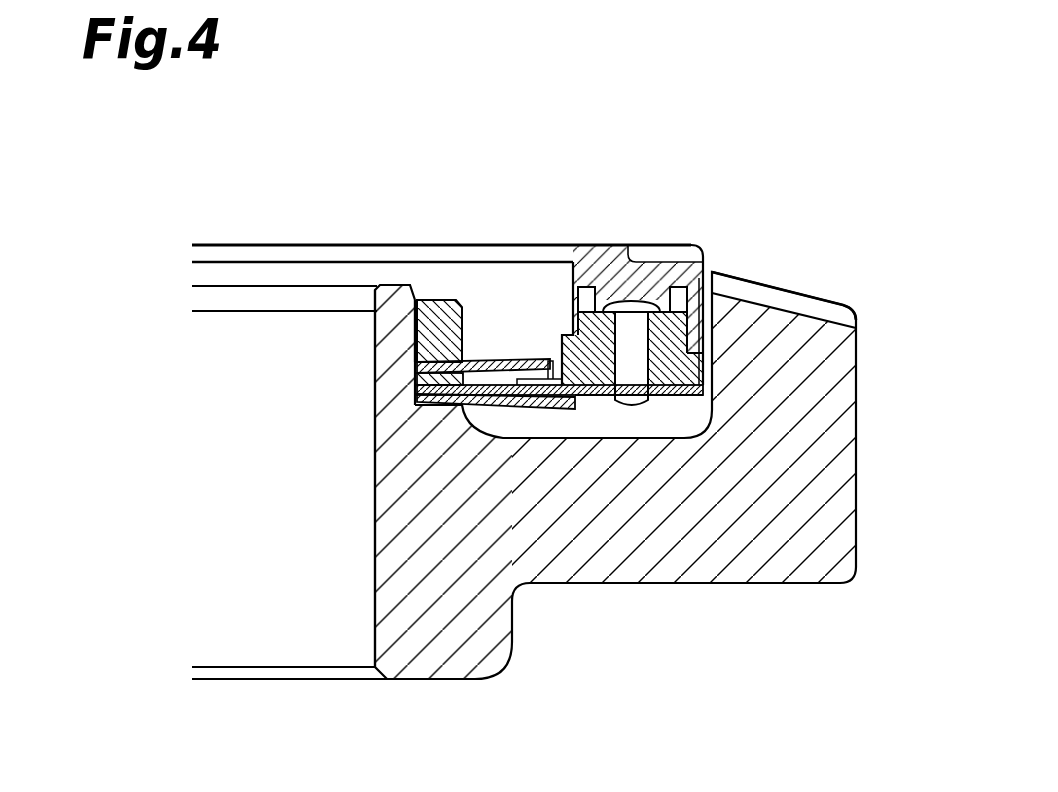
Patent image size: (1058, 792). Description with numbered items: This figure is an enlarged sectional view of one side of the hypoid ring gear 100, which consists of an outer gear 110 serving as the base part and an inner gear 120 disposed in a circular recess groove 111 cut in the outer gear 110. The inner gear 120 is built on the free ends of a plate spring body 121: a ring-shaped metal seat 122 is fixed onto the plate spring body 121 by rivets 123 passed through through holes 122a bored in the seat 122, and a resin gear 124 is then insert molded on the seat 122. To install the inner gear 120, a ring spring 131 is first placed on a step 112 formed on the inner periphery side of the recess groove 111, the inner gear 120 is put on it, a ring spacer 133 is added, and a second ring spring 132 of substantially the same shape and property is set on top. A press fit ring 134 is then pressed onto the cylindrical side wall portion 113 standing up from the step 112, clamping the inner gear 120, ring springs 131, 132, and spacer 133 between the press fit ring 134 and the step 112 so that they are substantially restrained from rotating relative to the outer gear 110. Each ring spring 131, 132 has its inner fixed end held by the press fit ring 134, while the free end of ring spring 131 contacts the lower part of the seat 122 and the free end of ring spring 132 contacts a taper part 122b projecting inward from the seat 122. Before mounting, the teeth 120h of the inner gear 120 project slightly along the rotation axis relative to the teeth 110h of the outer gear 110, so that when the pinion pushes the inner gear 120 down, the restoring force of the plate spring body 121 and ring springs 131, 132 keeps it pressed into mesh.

The hypoid ring gear 100 is at (822, 137).
The outer gear 110 is at (447, 668).
The teeth of the outer gear 110h is at (818, 303).
The circular recess groove 111 is at (505, 438).
The step 112 is at (412, 410).
The side wall portion 113 is at (416, 352).
The inner gear 120 is at (259, 247).
The teeth of the inner gear 120h is at (667, 250).
The plate spring body 121 is at (688, 400).
The seat 122 is at (690, 373).
The through holes 122a is at (673, 347).
The taper part 122b is at (544, 340).
The rivets 123 is at (632, 402).
The resin gear 124 is at (657, 280).
The ring spring 131 is at (557, 409).
The ring spring 132 is at (479, 361).
The ring spacer 133 is at (414, 378).
The press fit ring 134 is at (430, 310).